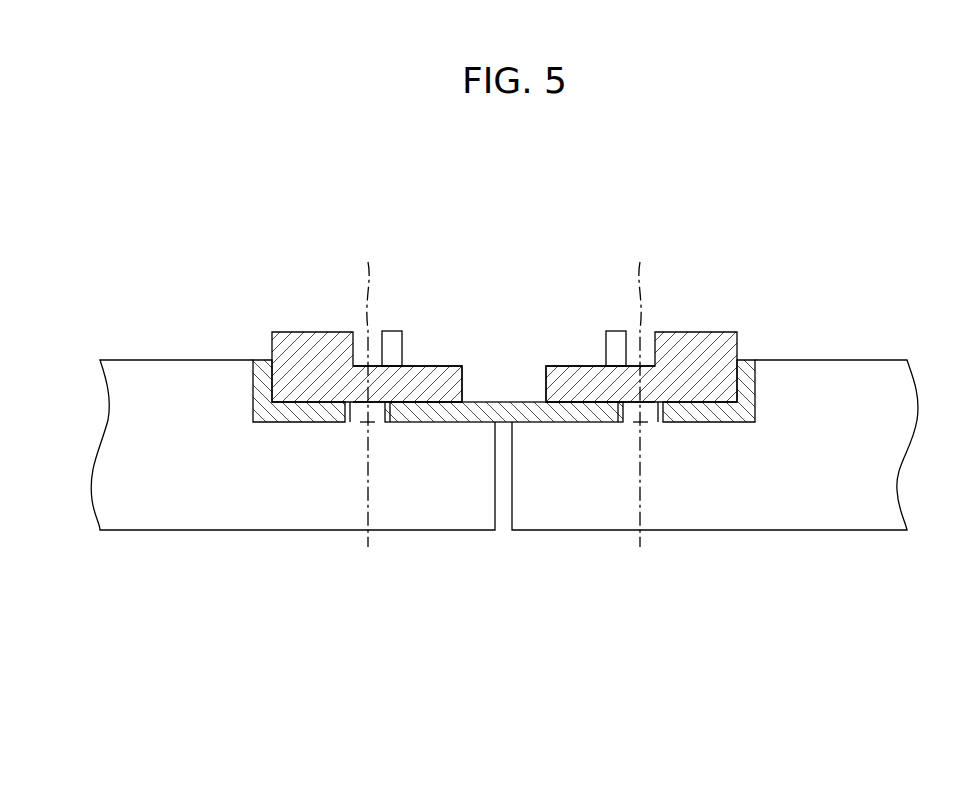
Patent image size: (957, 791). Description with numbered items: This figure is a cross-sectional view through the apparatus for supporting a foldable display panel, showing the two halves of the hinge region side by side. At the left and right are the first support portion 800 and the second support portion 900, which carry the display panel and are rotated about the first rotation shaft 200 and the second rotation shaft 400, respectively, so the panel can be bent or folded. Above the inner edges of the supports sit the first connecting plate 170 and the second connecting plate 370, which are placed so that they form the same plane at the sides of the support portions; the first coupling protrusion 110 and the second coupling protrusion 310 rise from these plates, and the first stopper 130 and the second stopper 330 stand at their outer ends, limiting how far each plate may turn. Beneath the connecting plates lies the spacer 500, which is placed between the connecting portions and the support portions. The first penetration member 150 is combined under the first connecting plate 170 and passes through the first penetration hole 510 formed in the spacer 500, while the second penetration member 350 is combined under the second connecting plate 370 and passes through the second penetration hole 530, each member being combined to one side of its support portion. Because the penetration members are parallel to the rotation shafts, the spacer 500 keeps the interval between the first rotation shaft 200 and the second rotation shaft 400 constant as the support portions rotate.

The first coupling protrusion 110 is at (387, 331).
The first stopper 130 is at (293, 332).
The first penetration member 150 is at (377, 415).
The first connecting plate 170 is at (447, 366).
The first rotation shaft 200 is at (350, 390).
The second coupling protrusion 310 is at (620, 331).
The second stopper 330 is at (716, 332).
The second penetration member 350 is at (633, 413).
The second connecting plate 370 is at (567, 366).
The second rotation shaft 400 is at (658, 390).
The spacer 500 is at (568, 412).
The first penetration hole 510 is at (355, 410).
The second penetration hole 530 is at (653, 412).
The first support portion 800 is at (165, 513).
The second support portion 900 is at (857, 513).